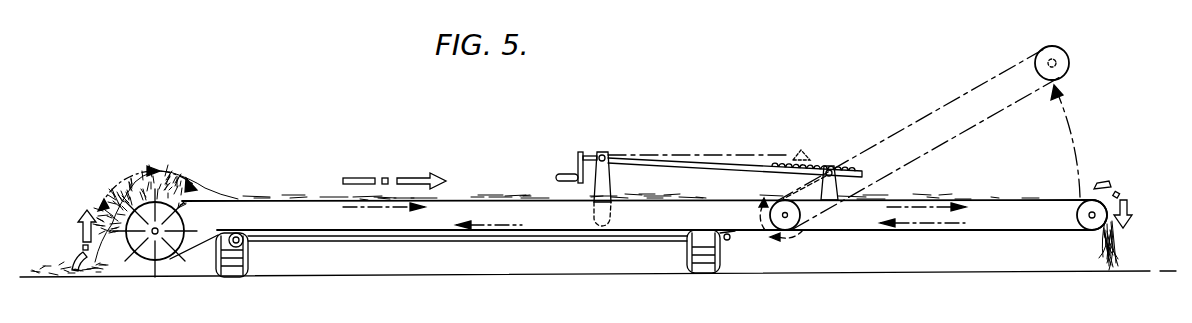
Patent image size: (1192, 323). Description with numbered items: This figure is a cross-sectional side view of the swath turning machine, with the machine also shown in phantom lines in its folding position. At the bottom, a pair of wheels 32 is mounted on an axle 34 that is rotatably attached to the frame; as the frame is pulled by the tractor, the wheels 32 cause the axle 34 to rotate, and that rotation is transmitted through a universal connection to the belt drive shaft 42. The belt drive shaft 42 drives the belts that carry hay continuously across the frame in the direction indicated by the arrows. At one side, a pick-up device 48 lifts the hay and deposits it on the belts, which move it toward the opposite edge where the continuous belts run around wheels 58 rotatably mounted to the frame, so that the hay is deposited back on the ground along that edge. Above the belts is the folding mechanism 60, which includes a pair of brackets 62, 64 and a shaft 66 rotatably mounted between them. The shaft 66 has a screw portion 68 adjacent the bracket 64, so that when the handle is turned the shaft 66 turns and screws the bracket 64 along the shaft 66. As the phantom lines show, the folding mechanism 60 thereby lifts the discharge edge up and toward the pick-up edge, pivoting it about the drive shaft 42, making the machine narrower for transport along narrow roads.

The wheels 32 is at (249, 259).
The axle 34 is at (378, 238).
The belt drive shaft 42 is at (791, 229).
The pick-up device 48 is at (140, 285).
The wheels 58 is at (1106, 207).
The folding mechanism 60 is at (787, 116).
The bracket 62 is at (604, 154).
The bracket 64 is at (831, 169).
The shaft 66 is at (691, 162).
The screw portion 68 is at (862, 170).